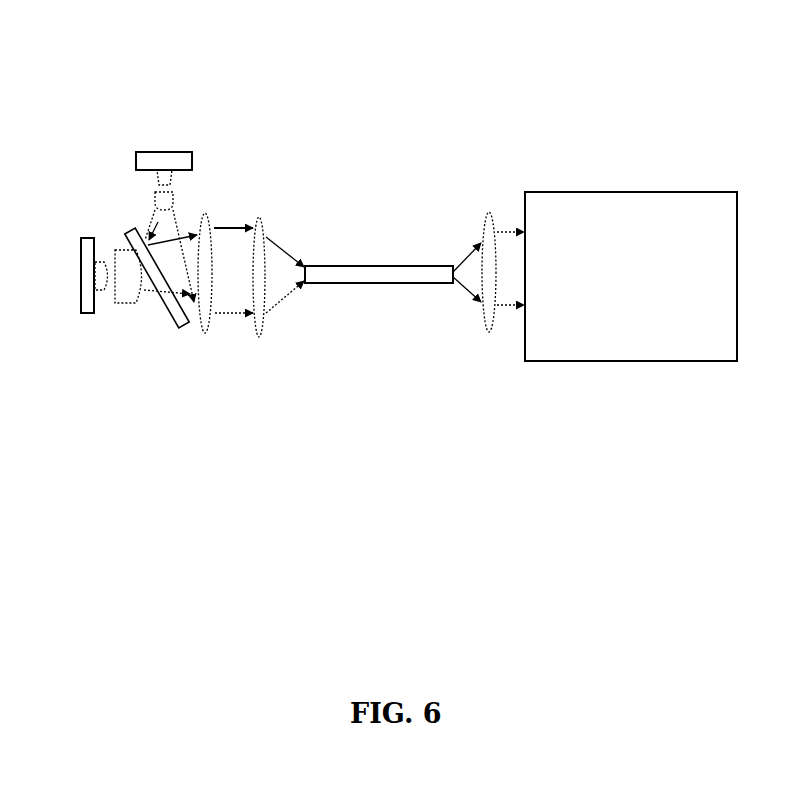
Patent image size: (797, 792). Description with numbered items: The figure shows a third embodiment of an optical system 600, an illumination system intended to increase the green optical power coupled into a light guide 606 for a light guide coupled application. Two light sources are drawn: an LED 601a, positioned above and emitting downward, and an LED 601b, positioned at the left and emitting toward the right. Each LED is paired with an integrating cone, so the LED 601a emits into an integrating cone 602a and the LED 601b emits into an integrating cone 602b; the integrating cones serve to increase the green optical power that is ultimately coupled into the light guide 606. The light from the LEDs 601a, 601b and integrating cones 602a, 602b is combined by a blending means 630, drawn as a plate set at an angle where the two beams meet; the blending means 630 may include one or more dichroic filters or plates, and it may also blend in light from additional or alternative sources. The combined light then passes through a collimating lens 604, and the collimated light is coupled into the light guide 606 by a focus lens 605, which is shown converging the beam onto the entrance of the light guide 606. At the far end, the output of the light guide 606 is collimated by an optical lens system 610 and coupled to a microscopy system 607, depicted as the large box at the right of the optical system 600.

The optical system 600 is at (454, 84).
The LED 601a is at (152, 153).
The LED 601b is at (88, 316).
The integrating cone 602a is at (166, 180).
The integrating cone 602b is at (102, 261).
The blending means 630 is at (163, 294).
The collimating lens 604 is at (203, 336).
The focus lens 605 is at (257, 323).
The light guide 606 is at (370, 287).
The optical lens system 610 is at (487, 338).
The microscopy system 607 is at (578, 363).